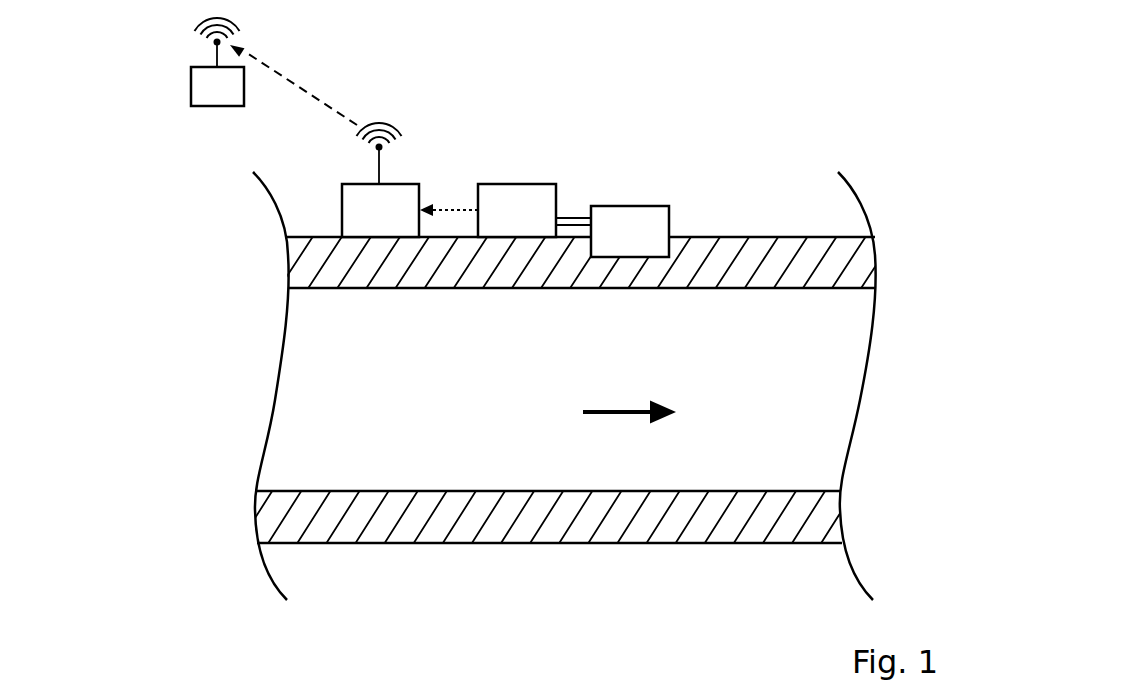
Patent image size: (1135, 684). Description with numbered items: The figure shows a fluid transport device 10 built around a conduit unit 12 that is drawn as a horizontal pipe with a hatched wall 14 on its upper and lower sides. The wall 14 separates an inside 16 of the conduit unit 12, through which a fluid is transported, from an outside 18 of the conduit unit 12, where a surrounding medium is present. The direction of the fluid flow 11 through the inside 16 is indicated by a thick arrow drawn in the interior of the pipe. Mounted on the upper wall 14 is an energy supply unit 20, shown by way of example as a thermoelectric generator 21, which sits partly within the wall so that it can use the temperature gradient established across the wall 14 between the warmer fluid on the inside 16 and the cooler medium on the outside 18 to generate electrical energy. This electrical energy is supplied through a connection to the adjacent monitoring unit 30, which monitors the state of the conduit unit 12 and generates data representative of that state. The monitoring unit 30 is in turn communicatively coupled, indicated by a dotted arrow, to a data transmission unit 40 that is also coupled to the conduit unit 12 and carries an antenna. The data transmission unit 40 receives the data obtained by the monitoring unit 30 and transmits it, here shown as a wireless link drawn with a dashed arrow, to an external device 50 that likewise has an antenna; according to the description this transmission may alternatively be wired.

The fluid transport device 10 is at (160, 218).
The fluid flow 11 is at (622, 410).
The conduit unit 12 is at (798, 217).
The wall 14 is at (325, 237).
The inside 16 is at (300, 360).
The outside 18 is at (753, 150).
The energy supply unit 20 is at (654, 193).
The thermoelectric generator 21 is at (623, 206).
The monitoring unit 30 is at (509, 184).
The data transmission unit 40 is at (403, 184).
The external device 50 is at (191, 82).